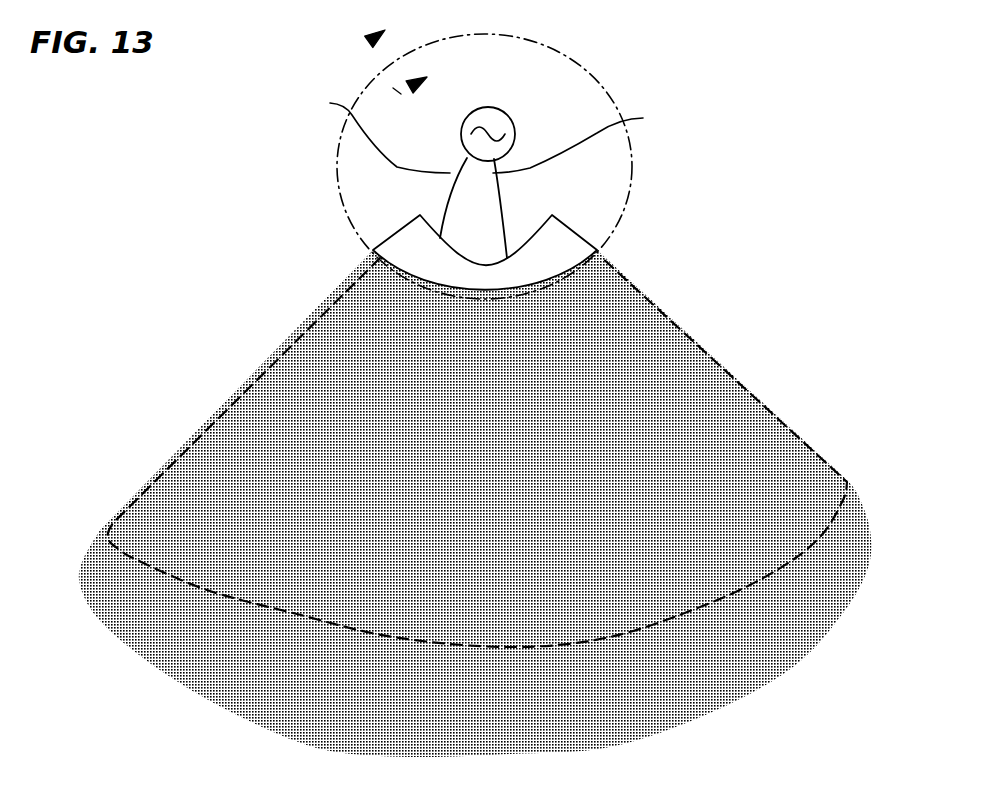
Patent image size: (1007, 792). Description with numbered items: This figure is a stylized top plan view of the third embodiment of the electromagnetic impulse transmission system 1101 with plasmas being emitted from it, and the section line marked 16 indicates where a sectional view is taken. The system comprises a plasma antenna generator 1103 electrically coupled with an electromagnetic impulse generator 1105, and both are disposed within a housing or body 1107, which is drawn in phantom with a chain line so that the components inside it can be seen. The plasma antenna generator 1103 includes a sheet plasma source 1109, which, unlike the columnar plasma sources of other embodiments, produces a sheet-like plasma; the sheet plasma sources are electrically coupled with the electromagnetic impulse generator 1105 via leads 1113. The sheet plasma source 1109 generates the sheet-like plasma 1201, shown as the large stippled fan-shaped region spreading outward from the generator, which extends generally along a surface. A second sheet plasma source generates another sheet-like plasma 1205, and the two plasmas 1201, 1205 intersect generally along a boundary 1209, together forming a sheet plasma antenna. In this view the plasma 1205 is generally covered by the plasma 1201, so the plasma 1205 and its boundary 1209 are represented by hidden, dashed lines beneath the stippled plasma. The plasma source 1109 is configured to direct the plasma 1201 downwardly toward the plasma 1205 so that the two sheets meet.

The section line 16- 16 is at (411, 53).
The electromagnetic impulse transmission system 1101 is at (297, 172).
The plasma antenna generator 1103 is at (594, 234).
The electromagnetic impulse generator 1105 is at (516, 128).
The housing or body 1107 is at (595, 66).
The sheet plasma source 1109 is at (526, 245).
The leads 1113 is at (330, 103).
The sheet-like plasma 1201 is at (513, 438).
The sheet-like plasma 1205 is at (190, 428).
The boundary 1209 is at (708, 603).